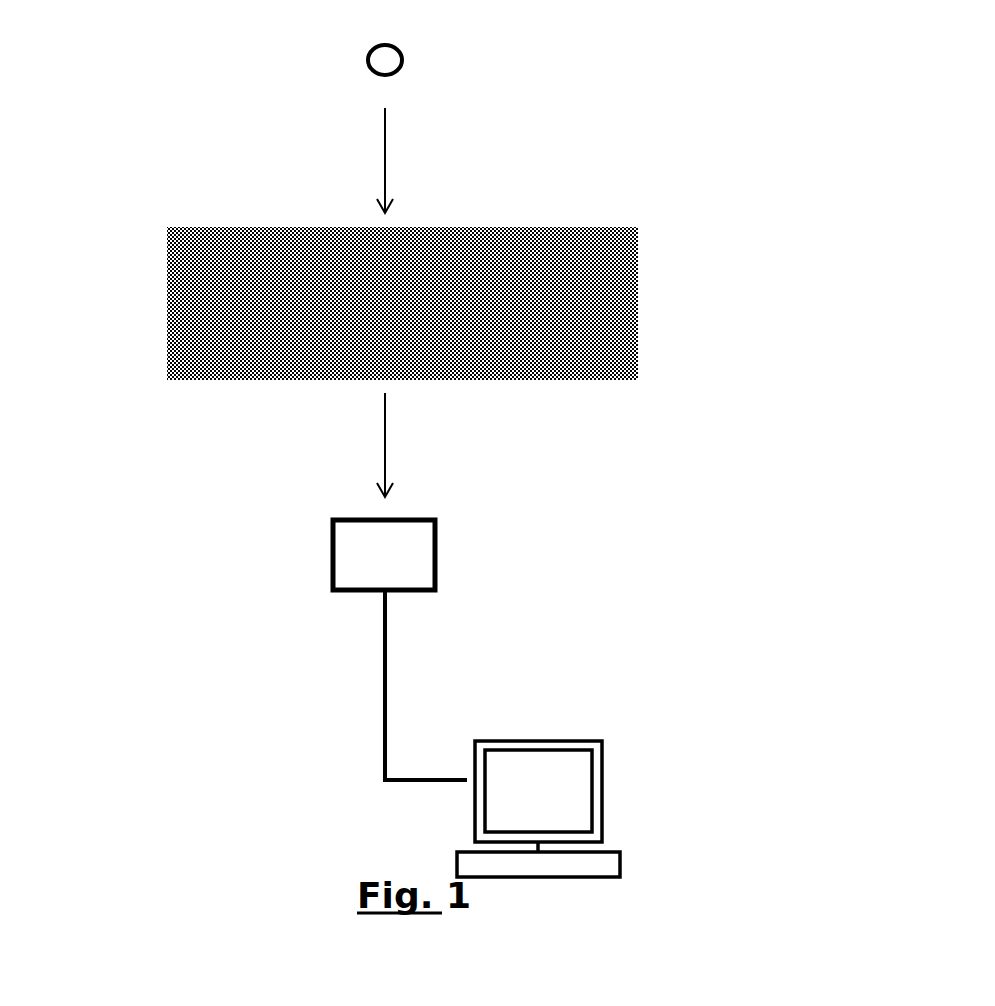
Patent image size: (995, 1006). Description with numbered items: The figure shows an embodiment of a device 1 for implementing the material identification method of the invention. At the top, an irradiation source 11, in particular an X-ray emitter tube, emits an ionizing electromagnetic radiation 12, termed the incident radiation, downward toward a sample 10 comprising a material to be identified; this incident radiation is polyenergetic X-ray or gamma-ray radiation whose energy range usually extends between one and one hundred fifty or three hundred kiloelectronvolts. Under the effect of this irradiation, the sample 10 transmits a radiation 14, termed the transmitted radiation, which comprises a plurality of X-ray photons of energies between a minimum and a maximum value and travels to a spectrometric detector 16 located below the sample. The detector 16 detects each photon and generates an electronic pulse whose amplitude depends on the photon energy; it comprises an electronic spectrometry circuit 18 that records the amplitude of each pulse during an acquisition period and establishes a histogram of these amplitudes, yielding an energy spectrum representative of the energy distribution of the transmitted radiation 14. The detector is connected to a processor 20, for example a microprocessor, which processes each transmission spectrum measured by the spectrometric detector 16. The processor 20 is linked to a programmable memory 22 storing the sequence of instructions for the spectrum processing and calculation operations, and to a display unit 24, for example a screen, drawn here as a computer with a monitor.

The device 1 is at (212, 142).
The sample 10 is at (570, 350).
The irradiation source 11 is at (402, 60).
The incident radiation 12 is at (410, 145).
The transmitted radiation 14 is at (412, 445).
The spectrometric detector 16 is at (491, 559).
The electronic spectrometry circuit 18 is at (448, 555).
The processor 20 is at (559, 801).
The programmable memory 22 is at (512, 870).
The display unit 24 is at (543, 756).